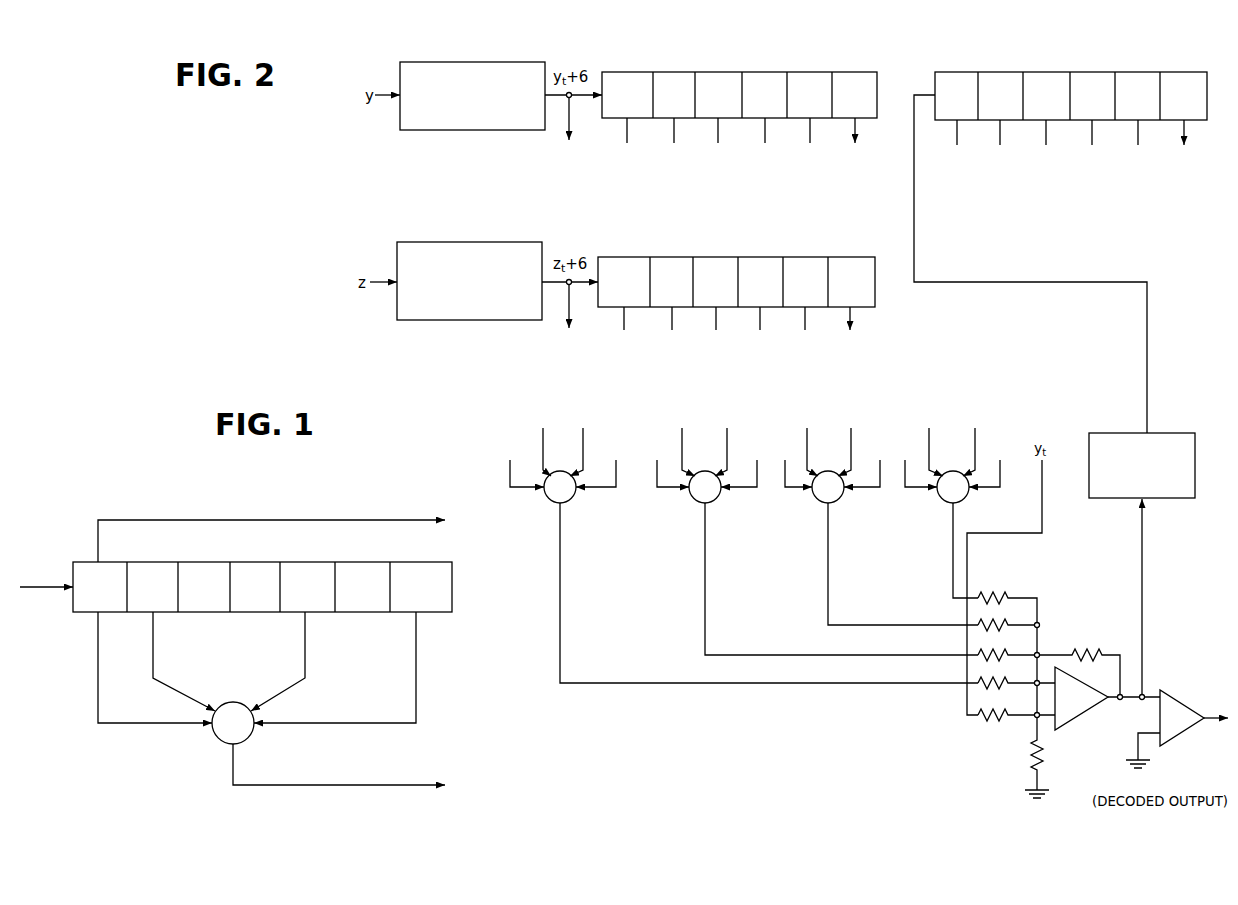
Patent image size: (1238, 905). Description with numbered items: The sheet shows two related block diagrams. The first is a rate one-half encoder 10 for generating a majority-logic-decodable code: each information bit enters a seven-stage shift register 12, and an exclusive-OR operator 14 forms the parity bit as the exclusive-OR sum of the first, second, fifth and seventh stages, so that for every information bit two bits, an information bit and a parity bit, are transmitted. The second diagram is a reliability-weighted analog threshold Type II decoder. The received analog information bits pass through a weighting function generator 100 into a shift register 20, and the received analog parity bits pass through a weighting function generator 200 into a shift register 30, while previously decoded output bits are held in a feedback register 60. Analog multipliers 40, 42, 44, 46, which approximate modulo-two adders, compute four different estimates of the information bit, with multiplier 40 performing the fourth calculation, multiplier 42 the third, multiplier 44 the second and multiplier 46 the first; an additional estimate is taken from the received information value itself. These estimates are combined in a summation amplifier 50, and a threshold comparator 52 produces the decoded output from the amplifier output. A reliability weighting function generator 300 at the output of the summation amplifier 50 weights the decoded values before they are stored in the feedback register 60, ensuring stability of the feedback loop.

In FIG. 1, the convolutional encoder 10 is at (63, 516).
In FIG. 1, the shift register 12 is at (75, 615).
In FIG. 1, the exclusive-OR operator 14 is at (218, 741).
In FIG. 2, the weighting function generator 100 is at (428, 63).
In FIG. 2, the weighting function generator 200 is at (428, 242).
In FIG. 2, the shift register 20 is at (851, 72).
In FIG. 2, the shift register 30 is at (862, 257).
In FIG. 2, the feedback register 60 is at (1158, 72).
In FIG. 2, the reliability weighting function generator 300 is at (1097, 433).
In FIG. 2, the analog multiplier 40 is at (549, 505).
In FIG. 2, the analog multiplier 42 is at (689, 505).
In FIG. 2, the analog multiplier 44 is at (814, 505).
In FIG. 2, the analog multiplier 46 is at (937, 505).
In FIG. 2, the summation amplifier 50 is at (1078, 730).
In FIG. 2, the threshold comparator 52 is at (1165, 691).